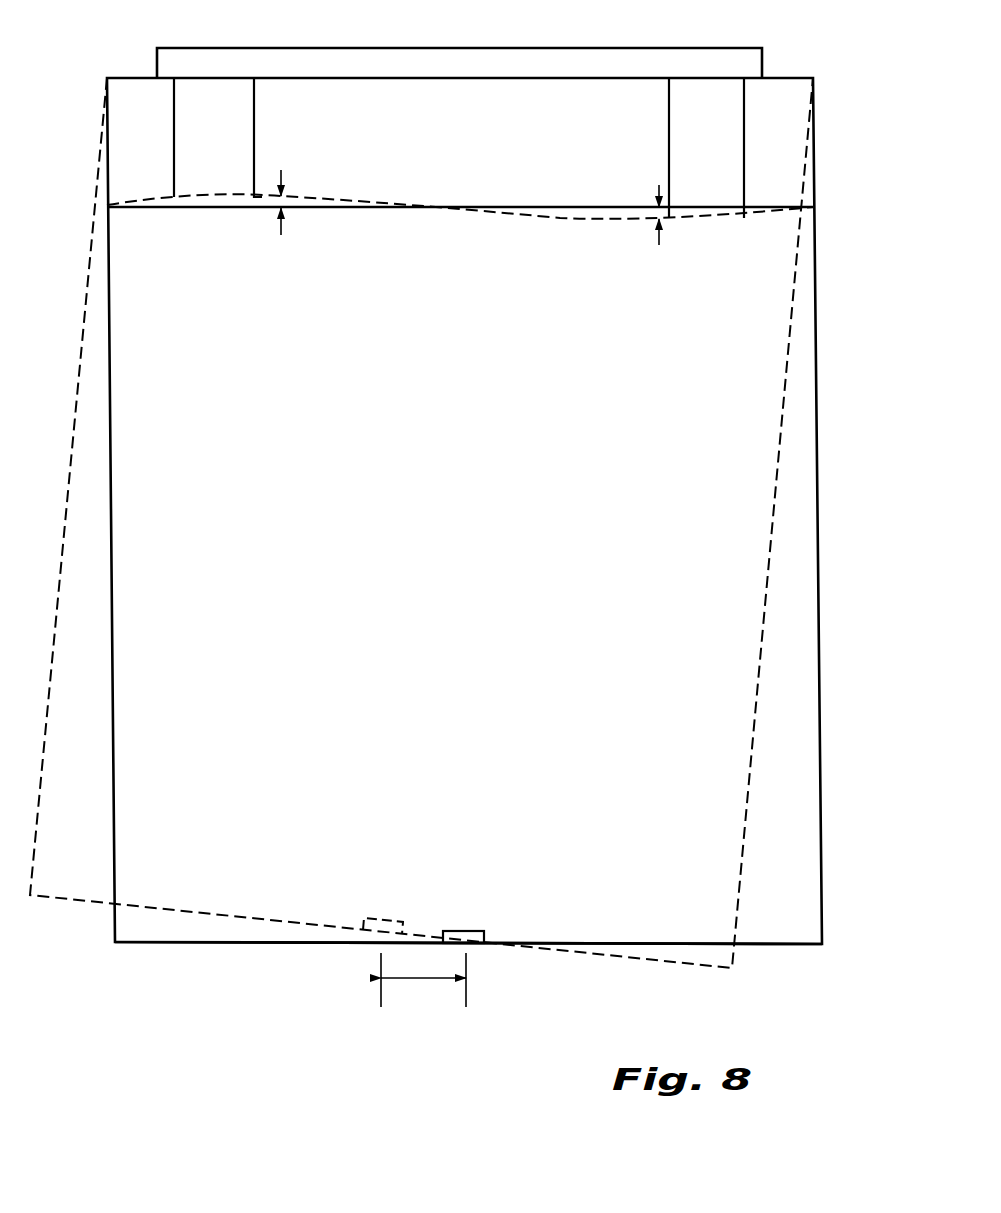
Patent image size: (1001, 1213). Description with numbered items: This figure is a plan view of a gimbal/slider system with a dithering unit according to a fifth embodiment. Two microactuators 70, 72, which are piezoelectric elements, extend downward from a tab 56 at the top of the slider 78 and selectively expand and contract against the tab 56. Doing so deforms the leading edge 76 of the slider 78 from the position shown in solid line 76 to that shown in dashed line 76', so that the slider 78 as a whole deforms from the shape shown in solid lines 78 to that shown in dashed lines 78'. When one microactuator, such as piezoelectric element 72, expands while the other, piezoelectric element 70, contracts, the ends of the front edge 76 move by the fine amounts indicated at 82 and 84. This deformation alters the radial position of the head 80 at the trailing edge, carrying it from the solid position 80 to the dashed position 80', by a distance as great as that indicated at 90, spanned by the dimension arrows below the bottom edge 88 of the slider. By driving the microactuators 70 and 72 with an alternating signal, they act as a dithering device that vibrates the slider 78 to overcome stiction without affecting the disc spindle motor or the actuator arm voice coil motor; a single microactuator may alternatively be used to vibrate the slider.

The tab 56 is at (728, 48).
The microactuator 70 is at (255, 100).
The microactuator 72 is at (669, 103).
The leading edge 76 is at (460, 180).
The deformed leading edge 76' is at (460, 180).
The slider 78 is at (500, 511).
The deformed slider 78' is at (469, 523).
The head 80 is at (495, 914).
The displaced head 80' is at (409, 899).
The fine movement of front edge end 82 is at (283, 233).
The fine movement of front edge end 84 is at (661, 243).
The bottom edge 88 is at (238, 944).
The distance 90 is at (420, 982).